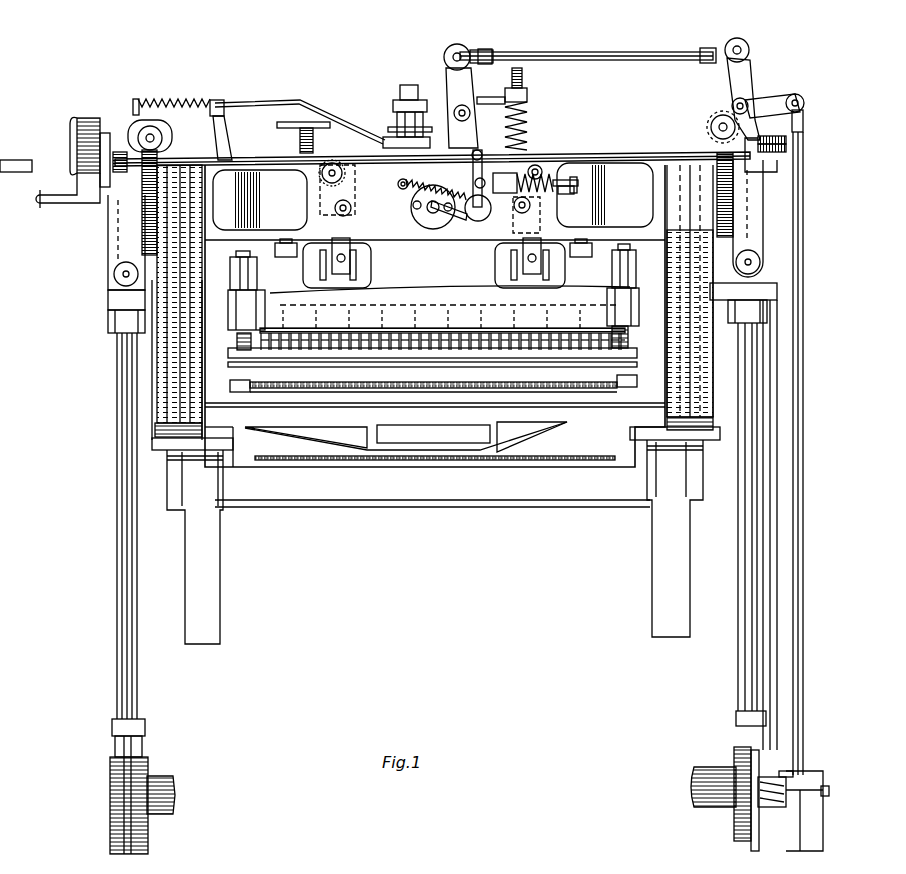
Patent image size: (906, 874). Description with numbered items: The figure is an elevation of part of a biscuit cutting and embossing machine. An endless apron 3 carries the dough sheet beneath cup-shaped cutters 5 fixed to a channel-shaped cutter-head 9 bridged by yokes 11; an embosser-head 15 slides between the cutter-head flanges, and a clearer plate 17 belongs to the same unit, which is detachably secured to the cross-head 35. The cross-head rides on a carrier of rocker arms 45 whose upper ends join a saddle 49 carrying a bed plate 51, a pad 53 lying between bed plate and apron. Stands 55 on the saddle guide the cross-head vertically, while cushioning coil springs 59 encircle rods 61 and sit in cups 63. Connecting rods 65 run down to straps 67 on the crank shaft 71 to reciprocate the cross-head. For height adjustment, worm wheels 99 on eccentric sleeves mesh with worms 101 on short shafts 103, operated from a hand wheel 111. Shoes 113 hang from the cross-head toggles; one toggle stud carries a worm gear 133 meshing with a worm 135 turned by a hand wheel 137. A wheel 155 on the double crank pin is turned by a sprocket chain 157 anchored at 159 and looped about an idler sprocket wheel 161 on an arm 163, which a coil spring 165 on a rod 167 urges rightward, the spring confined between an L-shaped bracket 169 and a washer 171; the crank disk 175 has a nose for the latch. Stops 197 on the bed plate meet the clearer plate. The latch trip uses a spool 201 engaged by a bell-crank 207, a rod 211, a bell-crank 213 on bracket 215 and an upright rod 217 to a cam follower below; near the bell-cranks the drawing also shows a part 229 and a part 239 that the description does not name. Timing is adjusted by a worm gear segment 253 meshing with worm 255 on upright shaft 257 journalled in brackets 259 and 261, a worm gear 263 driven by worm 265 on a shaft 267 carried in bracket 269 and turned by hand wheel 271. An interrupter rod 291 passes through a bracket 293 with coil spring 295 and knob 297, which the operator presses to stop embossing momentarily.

The endless apron 3 is at (453, 380).
The cutters 5 is at (413, 342).
The cutter-head 9 is at (618, 317).
The yokes 11 is at (273, 248).
The embosser-head 15 is at (623, 272).
The clearer plate 17 is at (628, 345).
The cross-head 35 is at (660, 170).
The rocker arms 45 is at (205, 604).
The saddle 49 is at (455, 503).
The bed plate 51 is at (580, 422).
The pad 53 is at (550, 384).
The stands 55 is at (140, 292).
The cushioning coil springs 59 is at (125, 302).
The rods 61 is at (190, 240).
The cups 63 is at (153, 362).
The connecting rods 65 is at (118, 428).
The straps 67 is at (123, 849).
The shaft 71 is at (163, 778).
The worm wheels 99 is at (140, 257).
The worms 101 is at (163, 136).
The short shafts 103 is at (146, 135).
The hand wheel 111 is at (80, 145).
The shoes 113 is at (365, 268).
The worm gear 133 is at (346, 173).
The worm 135 is at (260, 200).
The hand wheel 137 is at (278, 127).
The wheel 155 is at (433, 230).
The sprocket chain 157 is at (452, 184).
The anchor 159 is at (406, 190).
The idler sprocket wheel 161 is at (480, 222).
The arm 163 is at (480, 160).
The coil spring 165 is at (548, 180).
The rod 167 is at (598, 178).
The L-shaped bracket 169 is at (508, 173).
The washer 171 is at (578, 178).
The disk 175 is at (566, 194).
The stops 197 is at (235, 387).
The spool 201 is at (400, 112).
The bell-crank 207 is at (455, 75).
The rod 211 is at (592, 52).
The bell-crank 213 is at (745, 80).
The bracket 215 is at (753, 112).
The upright rod 217 is at (803, 402).
The bolt 229 is at (527, 96).
The spring 239 is at (522, 114).
The worm gear segment 253 is at (800, 856).
The worm 255 is at (786, 797).
The upright shaft 257 is at (773, 473).
The bracket 259 is at (781, 774).
The bracket 261 is at (777, 167).
The worm gear 263 is at (786, 148).
The worm 265 is at (786, 138).
The shaft 267 is at (685, 153).
The bracket 269 is at (128, 173).
The hand wheel 271 is at (110, 156).
The rod 291 is at (290, 100).
The bracket 293 is at (221, 127).
The coil spring 295 is at (174, 91).
The knob 297 is at (137, 98).